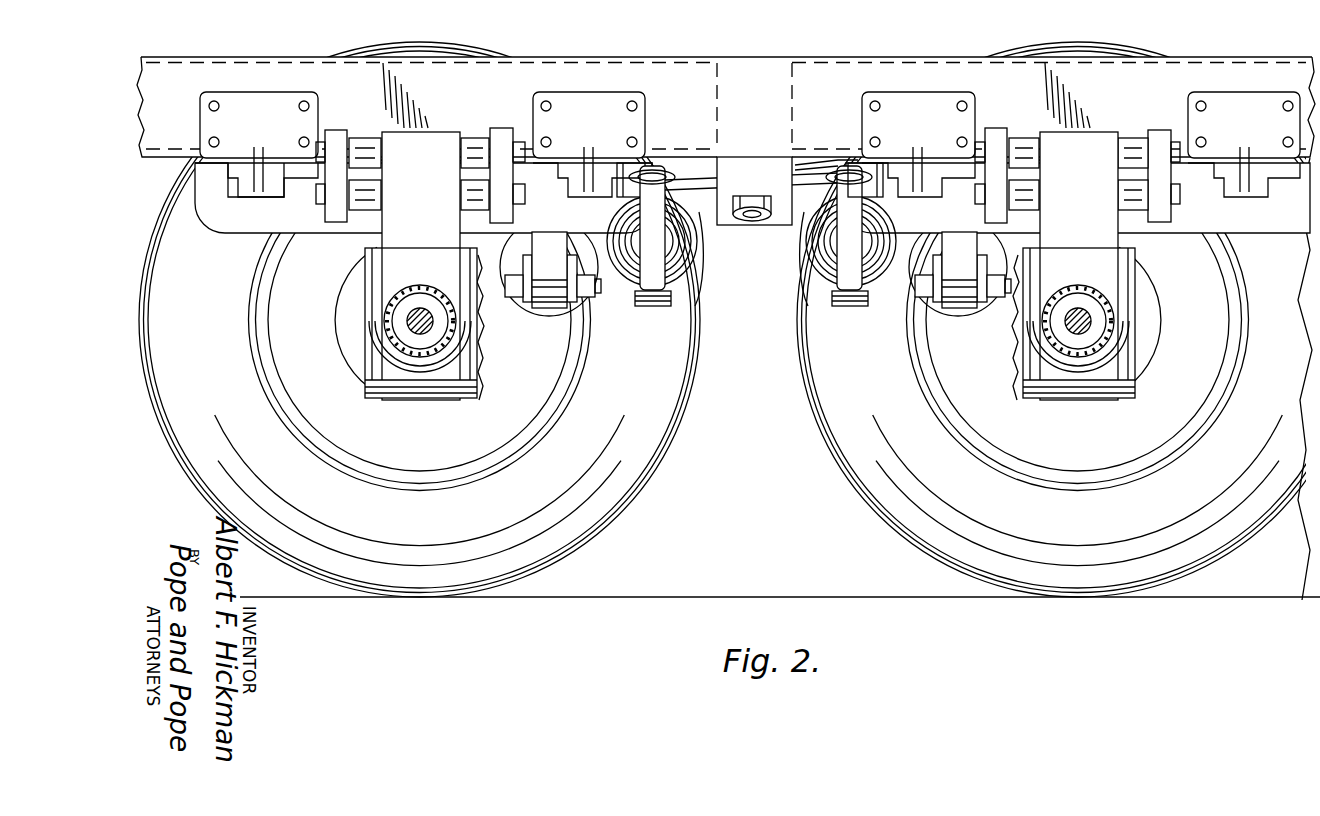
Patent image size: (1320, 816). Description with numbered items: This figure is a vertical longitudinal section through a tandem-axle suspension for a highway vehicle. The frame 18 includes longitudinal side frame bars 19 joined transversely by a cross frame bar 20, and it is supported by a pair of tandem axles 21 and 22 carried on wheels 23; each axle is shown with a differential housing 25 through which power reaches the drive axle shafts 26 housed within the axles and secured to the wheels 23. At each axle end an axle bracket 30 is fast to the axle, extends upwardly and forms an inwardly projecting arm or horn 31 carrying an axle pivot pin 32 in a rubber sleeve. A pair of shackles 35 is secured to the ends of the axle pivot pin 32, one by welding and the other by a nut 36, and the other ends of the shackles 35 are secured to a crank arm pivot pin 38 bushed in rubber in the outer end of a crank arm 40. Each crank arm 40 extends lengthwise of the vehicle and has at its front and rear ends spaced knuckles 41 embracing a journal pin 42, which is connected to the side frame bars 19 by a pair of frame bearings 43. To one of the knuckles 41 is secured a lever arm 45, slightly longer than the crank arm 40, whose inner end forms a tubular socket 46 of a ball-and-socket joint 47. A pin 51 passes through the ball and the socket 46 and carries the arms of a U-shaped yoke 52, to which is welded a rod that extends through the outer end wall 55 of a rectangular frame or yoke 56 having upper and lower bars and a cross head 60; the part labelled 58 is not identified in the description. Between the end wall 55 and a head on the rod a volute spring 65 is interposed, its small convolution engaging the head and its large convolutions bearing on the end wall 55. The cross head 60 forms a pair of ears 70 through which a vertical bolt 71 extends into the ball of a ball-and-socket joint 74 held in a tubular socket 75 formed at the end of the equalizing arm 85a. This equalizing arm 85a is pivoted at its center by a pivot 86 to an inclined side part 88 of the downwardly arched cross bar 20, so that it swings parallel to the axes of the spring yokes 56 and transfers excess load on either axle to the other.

The frame 18 is at (700, 57).
The longitudinal side frame bar 19 is at (931, 58).
The cross frame bar 20 is at (752, 156).
The axle 21 is at (395, 328).
The axle 22 is at (1080, 338).
The wheel 23 is at (572, 548).
The differential housing 25 is at (481, 362).
The drive axle shaft 26 is at (421, 310).
The axle bracket 30 is at (421, 266).
The arm or horn 31 is at (1079, 266).
The axle pivot pin 32 is at (462, 152).
The shackle 35 is at (326, 212).
The nut 36 is at (530, 146).
The crank arm pivot pin 38 is at (462, 197).
The crank arm 40 is at (215, 232).
The knuckle 41 is at (205, 185).
The journal pin 42 is at (1215, 192).
The frame bearing 43 is at (268, 102).
The lever arm 45 is at (546, 312).
The tubular socket 46 is at (956, 312).
The ball-and-socket joint 47 is at (530, 310).
The pin 51 is at (988, 298).
The U-shaped yoke 52 is at (580, 298).
The outer end wall 55 is at (520, 248).
The rectangular frame or yoke 56 is at (924, 250).
The spring rod 58 is at (652, 296).
The cross head 60 is at (640, 214).
The volute spring 65 is at (826, 240).
The ear 70 is at (840, 168).
The vertical bolt 71 is at (860, 186).
The ball-and-socket joint 74 is at (658, 170).
The tubular socket 75 is at (858, 152).
The equalizing arm 85a is at (806, 160).
The pivot 86 is at (752, 218).
The inclined side part 88 is at (746, 180).